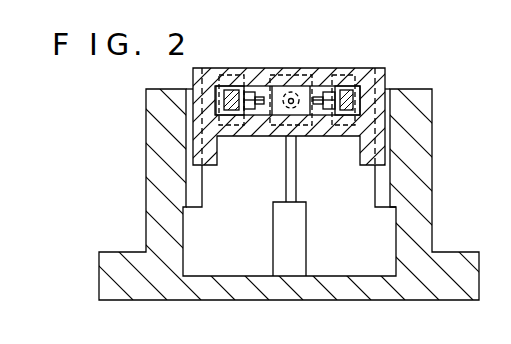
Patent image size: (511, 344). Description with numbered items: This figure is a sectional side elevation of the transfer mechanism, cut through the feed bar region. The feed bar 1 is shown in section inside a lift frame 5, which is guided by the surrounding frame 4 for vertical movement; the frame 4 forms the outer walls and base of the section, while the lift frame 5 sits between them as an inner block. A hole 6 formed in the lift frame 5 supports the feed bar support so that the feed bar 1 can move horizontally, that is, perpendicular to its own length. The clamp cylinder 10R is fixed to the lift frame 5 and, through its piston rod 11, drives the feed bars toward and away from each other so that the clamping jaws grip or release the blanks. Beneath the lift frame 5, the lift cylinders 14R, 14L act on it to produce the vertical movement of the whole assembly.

The feed bar 1 is at (229, 92).
The frame 4 is at (432, 122).
The lift frame 5 is at (322, 128).
The hole 6 is at (266, 115).
The clamp cylinder 10R is at (289, 87).
The piston rod 11 is at (291, 104).
The lift cylinder 14R is at (307, 213).
The lift cylinder 14L is at (319, 239).